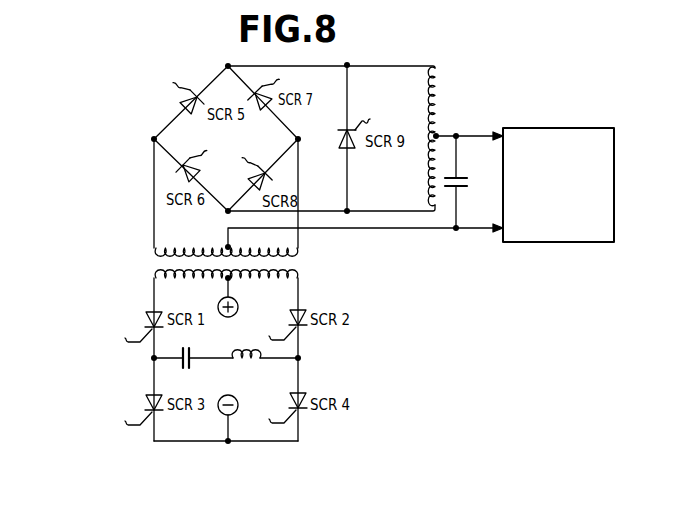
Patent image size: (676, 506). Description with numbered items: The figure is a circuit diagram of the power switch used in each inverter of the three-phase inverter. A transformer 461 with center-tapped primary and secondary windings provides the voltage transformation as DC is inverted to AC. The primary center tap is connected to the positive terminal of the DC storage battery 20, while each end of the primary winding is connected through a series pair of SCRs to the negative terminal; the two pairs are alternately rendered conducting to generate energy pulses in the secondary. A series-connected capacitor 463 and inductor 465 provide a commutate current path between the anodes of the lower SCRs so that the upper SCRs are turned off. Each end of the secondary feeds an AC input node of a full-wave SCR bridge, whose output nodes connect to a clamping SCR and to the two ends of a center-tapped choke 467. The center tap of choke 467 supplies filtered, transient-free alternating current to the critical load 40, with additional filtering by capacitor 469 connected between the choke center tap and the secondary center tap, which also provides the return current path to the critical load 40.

The DC storage battery 20 is at (240, 307).
The critical load 40 is at (565, 243).
The transformer 461 is at (143, 266).
The capacitor 463 is at (195, 350).
The inductor 465 is at (247, 366).
The center-tapped choke 467 is at (452, 88).
The capacitor 469 is at (461, 158).